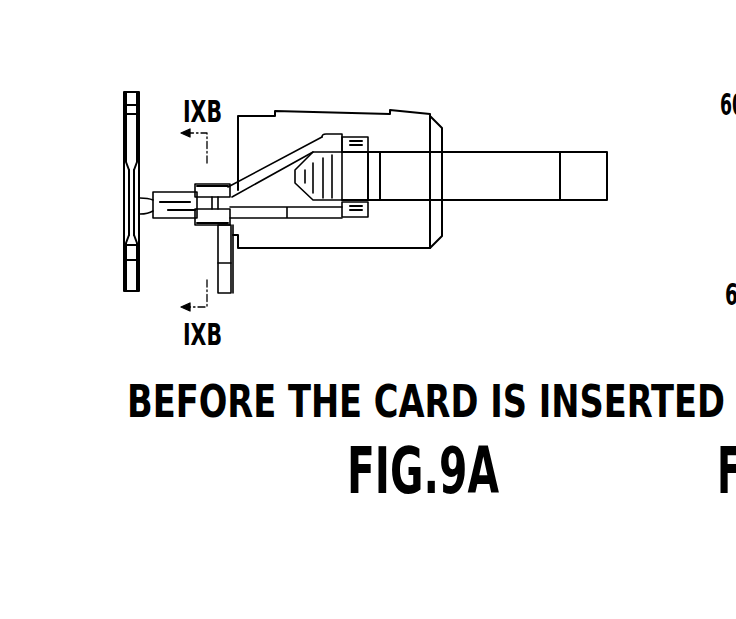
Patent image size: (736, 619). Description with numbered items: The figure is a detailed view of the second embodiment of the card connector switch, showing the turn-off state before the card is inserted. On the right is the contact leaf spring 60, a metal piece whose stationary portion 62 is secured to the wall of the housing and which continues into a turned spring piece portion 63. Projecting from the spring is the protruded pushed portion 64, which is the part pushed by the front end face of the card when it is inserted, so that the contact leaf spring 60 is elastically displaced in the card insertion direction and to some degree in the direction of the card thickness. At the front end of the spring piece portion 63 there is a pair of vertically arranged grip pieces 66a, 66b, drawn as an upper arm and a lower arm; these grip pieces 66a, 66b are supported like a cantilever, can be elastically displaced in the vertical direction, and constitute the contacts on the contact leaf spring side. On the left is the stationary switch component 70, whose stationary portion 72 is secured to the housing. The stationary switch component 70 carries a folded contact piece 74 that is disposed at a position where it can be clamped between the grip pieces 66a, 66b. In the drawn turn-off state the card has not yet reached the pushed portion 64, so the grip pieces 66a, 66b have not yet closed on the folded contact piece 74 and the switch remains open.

The contact leaf spring 60 is at (487, 122).
The stationary portion 62 is at (402, 238).
The spring piece portion 63 is at (575, 200).
The pushed portion 64 is at (317, 152).
The grip piece 66a is at (263, 168).
The grip piece 66b is at (262, 210).
The stationary switch component 70 is at (114, 128).
The stationary portion 72 is at (124, 220).
The folded contact piece 74 is at (168, 192).